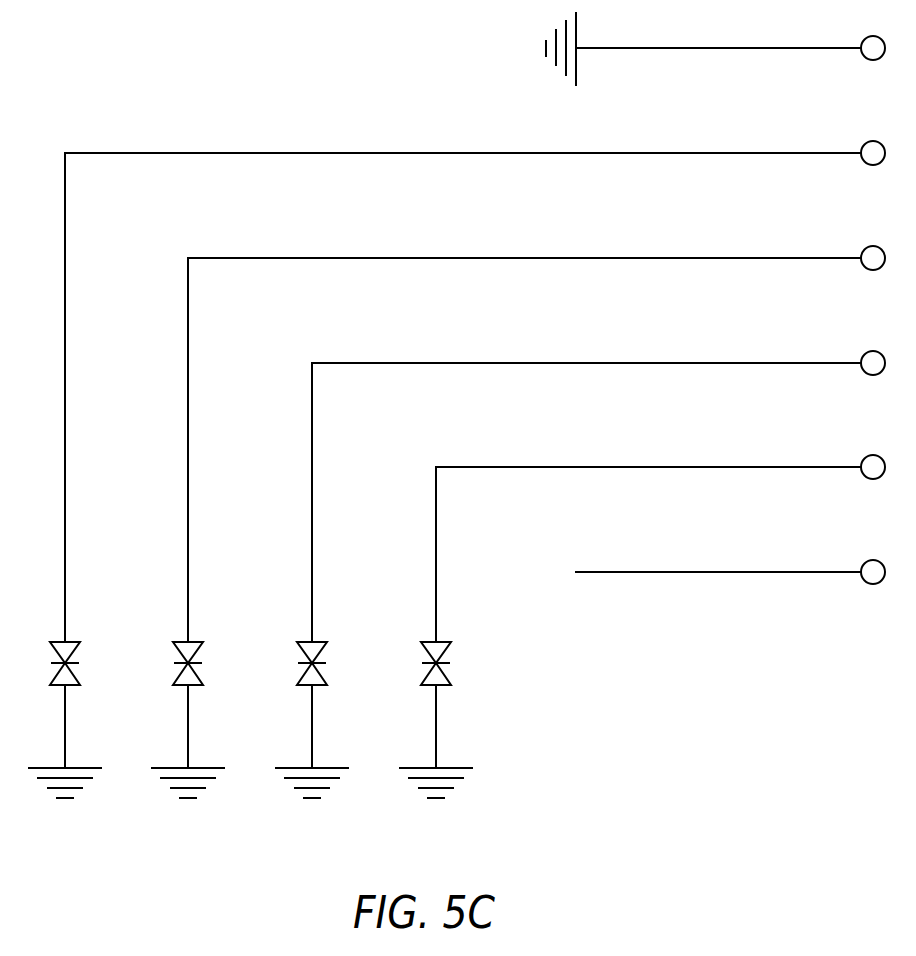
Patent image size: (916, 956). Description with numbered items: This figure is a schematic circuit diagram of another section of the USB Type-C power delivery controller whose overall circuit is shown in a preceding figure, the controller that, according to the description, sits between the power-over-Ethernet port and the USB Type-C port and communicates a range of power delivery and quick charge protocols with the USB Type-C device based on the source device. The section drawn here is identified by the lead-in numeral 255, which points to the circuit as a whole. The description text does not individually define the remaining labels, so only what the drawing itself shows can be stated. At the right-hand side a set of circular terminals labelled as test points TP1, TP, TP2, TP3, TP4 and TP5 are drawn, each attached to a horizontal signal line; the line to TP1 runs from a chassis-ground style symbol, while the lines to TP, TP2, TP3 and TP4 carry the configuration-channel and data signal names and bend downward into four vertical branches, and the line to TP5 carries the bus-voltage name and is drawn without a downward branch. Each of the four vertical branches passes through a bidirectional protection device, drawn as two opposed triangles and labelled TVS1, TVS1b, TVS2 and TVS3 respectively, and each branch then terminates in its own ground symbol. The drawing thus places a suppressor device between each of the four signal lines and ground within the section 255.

The ESD protection circuit 255 is at (113, 110).
The ground test point TP1 is at (724, 53).
The C0CC2 test point TP is at (478, 381).
The C0CC1 test point TP2 is at (545, 433).
The DM test point TP3 is at (607, 486).
The DP test point TP4 is at (669, 538).
The VBUS2 test point TP5 is at (739, 578).
The TVS diode AZ5325-01F TVS1 is at (87, 718).
The TVS diode AZ5325-01F TVS1b is at (210, 718).
The TVS diode AZ5325-01F TVS2 is at (334, 718).
The TVS diode AZ5325-01F TVS3 is at (458, 718).